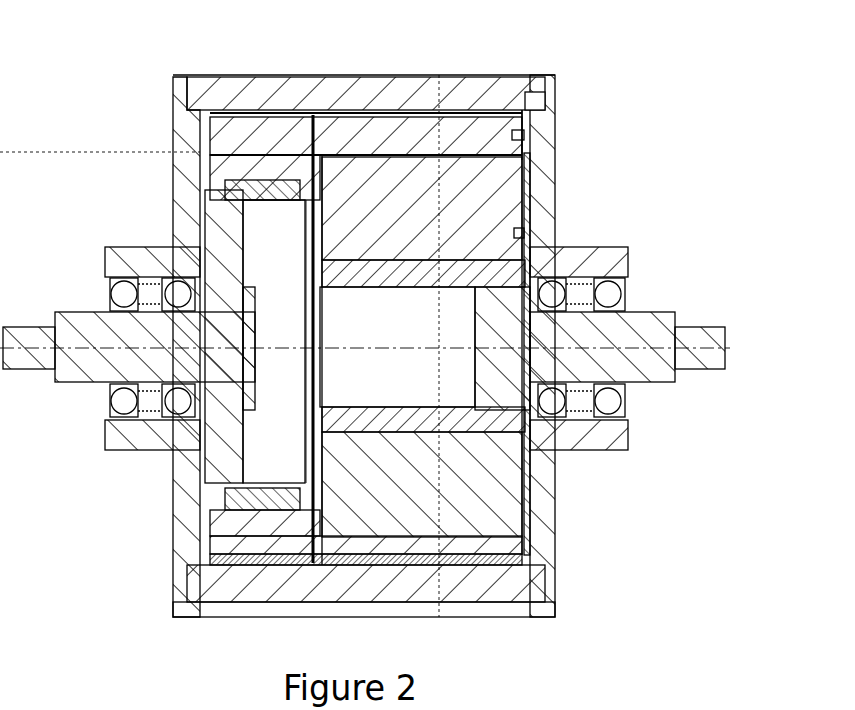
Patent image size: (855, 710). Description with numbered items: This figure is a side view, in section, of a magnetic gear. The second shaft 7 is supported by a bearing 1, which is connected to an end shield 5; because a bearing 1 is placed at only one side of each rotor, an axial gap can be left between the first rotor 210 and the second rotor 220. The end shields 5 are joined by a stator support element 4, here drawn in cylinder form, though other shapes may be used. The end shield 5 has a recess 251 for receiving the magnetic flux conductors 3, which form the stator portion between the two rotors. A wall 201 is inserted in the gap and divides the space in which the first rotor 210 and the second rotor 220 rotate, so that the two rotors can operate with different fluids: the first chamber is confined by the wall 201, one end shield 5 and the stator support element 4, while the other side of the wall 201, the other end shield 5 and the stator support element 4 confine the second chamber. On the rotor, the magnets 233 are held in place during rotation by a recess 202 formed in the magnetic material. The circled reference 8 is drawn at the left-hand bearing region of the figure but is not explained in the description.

The bearing 1 is at (628, 272).
The magnetic flux conductors 3 is at (512, 75).
The stator support element 4 is at (213, 76).
The end shield 5 is at (552, 75).
The second shaft 7 is at (670, 309).
The bearing 8 is at (137, 290).
The wall 201 is at (312, 542).
The recess 202 is at (518, 233).
The first rotor 210 is at (247, 167).
The second rotor 220 is at (360, 185).
The magnets 233 is at (515, 190).
The recess 251 is at (515, 137).